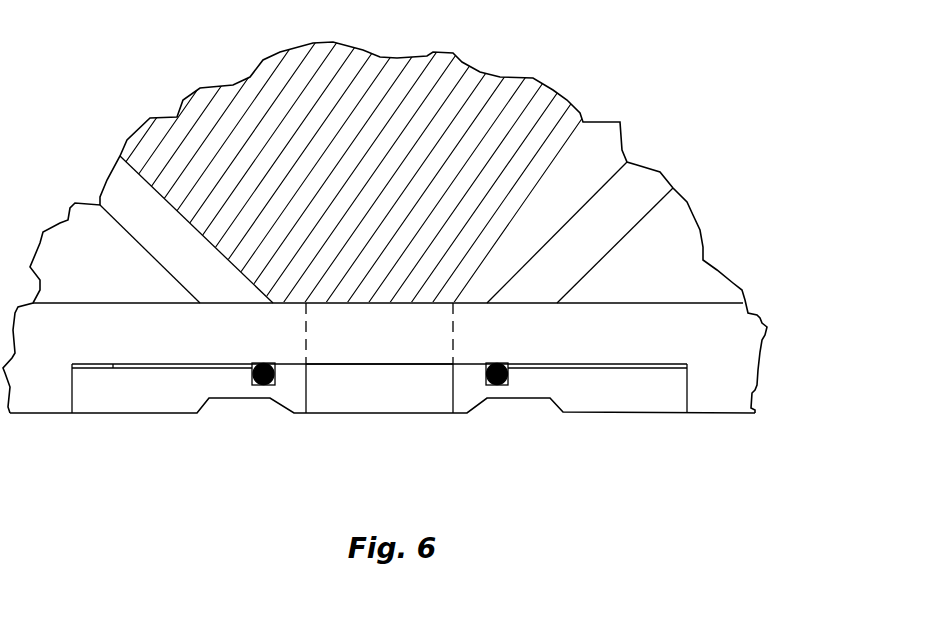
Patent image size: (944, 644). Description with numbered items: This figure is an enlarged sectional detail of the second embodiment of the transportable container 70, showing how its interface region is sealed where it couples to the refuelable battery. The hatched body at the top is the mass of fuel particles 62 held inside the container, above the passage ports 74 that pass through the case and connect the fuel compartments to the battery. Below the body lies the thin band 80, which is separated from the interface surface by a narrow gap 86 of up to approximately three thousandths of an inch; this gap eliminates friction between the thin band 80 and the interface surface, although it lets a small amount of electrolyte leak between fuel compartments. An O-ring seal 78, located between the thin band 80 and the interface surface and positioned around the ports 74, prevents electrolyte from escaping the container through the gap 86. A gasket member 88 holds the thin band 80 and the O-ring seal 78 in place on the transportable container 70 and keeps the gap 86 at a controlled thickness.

The fuel particles 62 is at (318, 157).
The transportable container 70 is at (792, 366).
The passage ports 74 is at (391, 414).
The O-ring seal 78 is at (262, 385).
The thin band 80 is at (459, 364).
The narrow gap 86 is at (352, 364).
The gasket member 88 is at (100, 415).